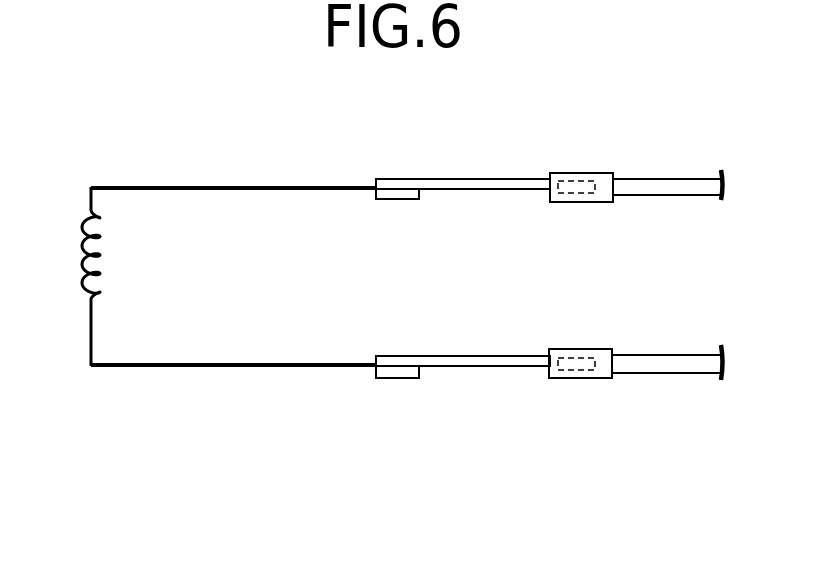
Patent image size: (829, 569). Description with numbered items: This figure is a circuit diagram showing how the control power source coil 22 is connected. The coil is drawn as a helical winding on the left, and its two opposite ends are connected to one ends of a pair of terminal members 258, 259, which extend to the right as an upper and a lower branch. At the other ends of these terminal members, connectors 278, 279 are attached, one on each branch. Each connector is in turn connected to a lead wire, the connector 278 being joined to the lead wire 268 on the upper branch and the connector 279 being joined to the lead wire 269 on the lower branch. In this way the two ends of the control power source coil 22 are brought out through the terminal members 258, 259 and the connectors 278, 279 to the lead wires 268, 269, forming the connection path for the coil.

The control power source coil 22 is at (101, 250).
The terminal member 258 is at (460, 185).
The connector 278 is at (605, 153).
The lead wire 268 is at (663, 182).
The terminal member 259 is at (477, 363).
The connector 279 is at (582, 379).
The lead wire 269 is at (680, 365).